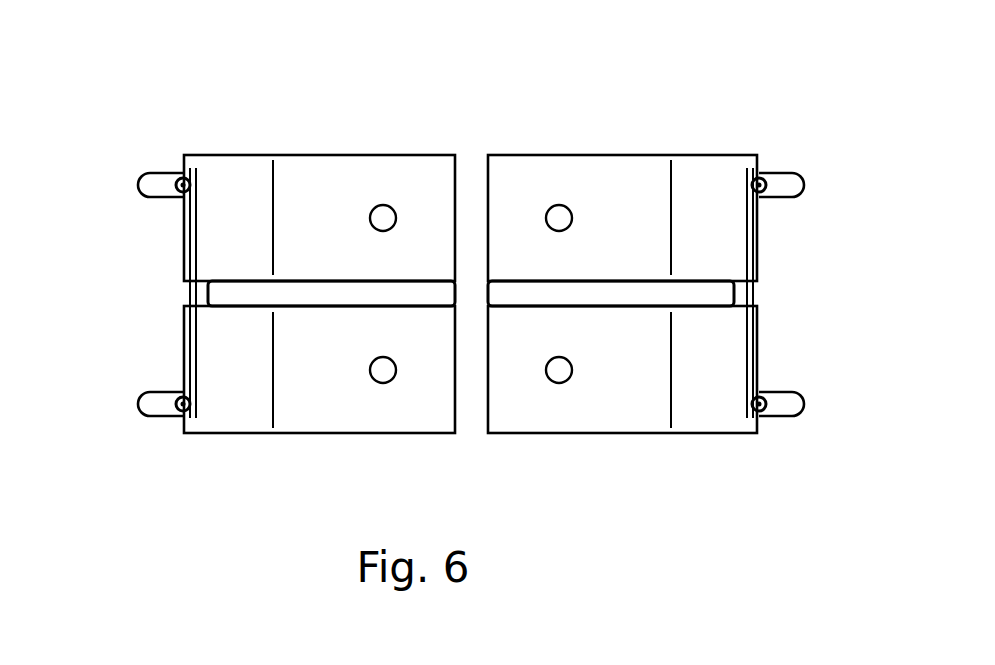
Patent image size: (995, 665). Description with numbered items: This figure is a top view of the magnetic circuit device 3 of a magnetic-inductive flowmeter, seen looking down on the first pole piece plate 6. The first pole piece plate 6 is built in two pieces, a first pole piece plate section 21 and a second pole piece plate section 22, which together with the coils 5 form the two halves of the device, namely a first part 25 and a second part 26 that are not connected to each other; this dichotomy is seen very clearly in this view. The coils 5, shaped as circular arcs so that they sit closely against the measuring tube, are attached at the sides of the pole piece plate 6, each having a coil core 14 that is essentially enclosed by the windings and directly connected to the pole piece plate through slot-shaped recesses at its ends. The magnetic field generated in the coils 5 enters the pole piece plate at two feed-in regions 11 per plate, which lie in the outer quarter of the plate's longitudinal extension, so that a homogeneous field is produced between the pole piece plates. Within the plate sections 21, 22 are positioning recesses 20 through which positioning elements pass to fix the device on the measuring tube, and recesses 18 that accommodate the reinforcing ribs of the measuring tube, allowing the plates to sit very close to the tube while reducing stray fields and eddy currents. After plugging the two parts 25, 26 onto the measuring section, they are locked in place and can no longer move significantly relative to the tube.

The magnetic circuit device 3 is at (170, 97).
The coil 5 is at (150, 182).
The first pole piece plate 6 is at (405, 140).
The feed-in region 11 is at (180, 175).
The coil core 14 is at (180, 197).
The recess 18 is at (477, 195).
The positioning recess 20 is at (378, 157).
The first pole piece plate section 21 is at (295, 155).
The second pole piece plate section 22 is at (585, 180).
The first part 25 is at (302, 458).
The second part 26 is at (571, 450).